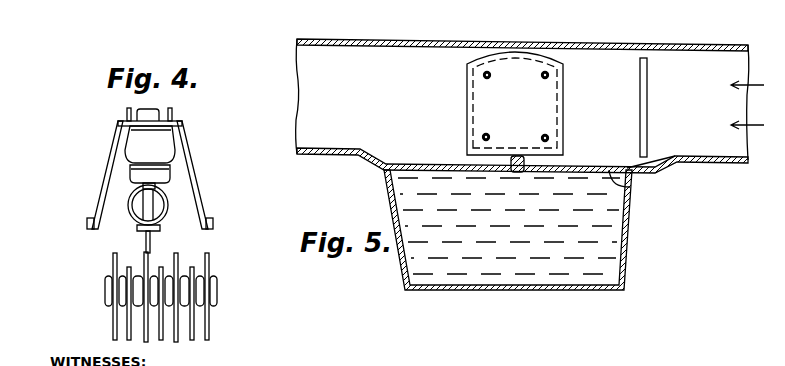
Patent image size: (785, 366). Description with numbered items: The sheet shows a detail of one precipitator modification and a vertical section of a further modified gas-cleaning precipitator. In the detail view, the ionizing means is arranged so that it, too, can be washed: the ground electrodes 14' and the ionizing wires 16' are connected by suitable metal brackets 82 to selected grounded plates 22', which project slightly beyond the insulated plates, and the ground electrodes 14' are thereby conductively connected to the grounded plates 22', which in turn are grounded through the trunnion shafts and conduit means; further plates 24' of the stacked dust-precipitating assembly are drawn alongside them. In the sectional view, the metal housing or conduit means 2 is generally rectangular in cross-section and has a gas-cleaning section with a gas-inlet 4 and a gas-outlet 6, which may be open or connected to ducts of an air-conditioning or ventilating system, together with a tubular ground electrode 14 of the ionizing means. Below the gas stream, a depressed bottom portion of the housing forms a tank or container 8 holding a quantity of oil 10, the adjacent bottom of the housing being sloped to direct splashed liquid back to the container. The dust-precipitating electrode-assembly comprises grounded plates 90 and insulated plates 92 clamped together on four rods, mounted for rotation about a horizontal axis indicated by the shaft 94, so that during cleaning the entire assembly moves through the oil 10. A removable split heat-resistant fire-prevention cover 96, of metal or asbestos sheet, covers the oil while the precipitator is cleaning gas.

In FIG. 5, the housing or conduit means 2 is at (599, 44).
In FIG. 5, the gas-inlet 4 is at (749, 151).
In FIG. 5, the gas-outlet 6 is at (297, 108).
In FIG. 5, the tank or container 8 is at (626, 253).
In FIG. 5, the oil 10 is at (617, 212).
In FIG. 5, the ground electrode 14 is at (662, 107).
In FIG. 4, the ionizing wires 16' is at (145, 168).
In FIG. 4, the ground electrodes 14' is at (128, 188).
In FIG. 4, the metal brackets 82 is at (151, 240).
In FIG. 4, the grounded plates 22' is at (160, 297).
In FIG. 4, the intermediate plates 24' is at (161, 304).
In FIG. 5, the grounded plates 90 is at (570, 62).
In FIG. 5, the insulated plates 92 is at (558, 95).
In FIG. 5, the shaft 94 is at (524, 138).
In FIG. 5, the fire-prevention cover 96 is at (629, 188).